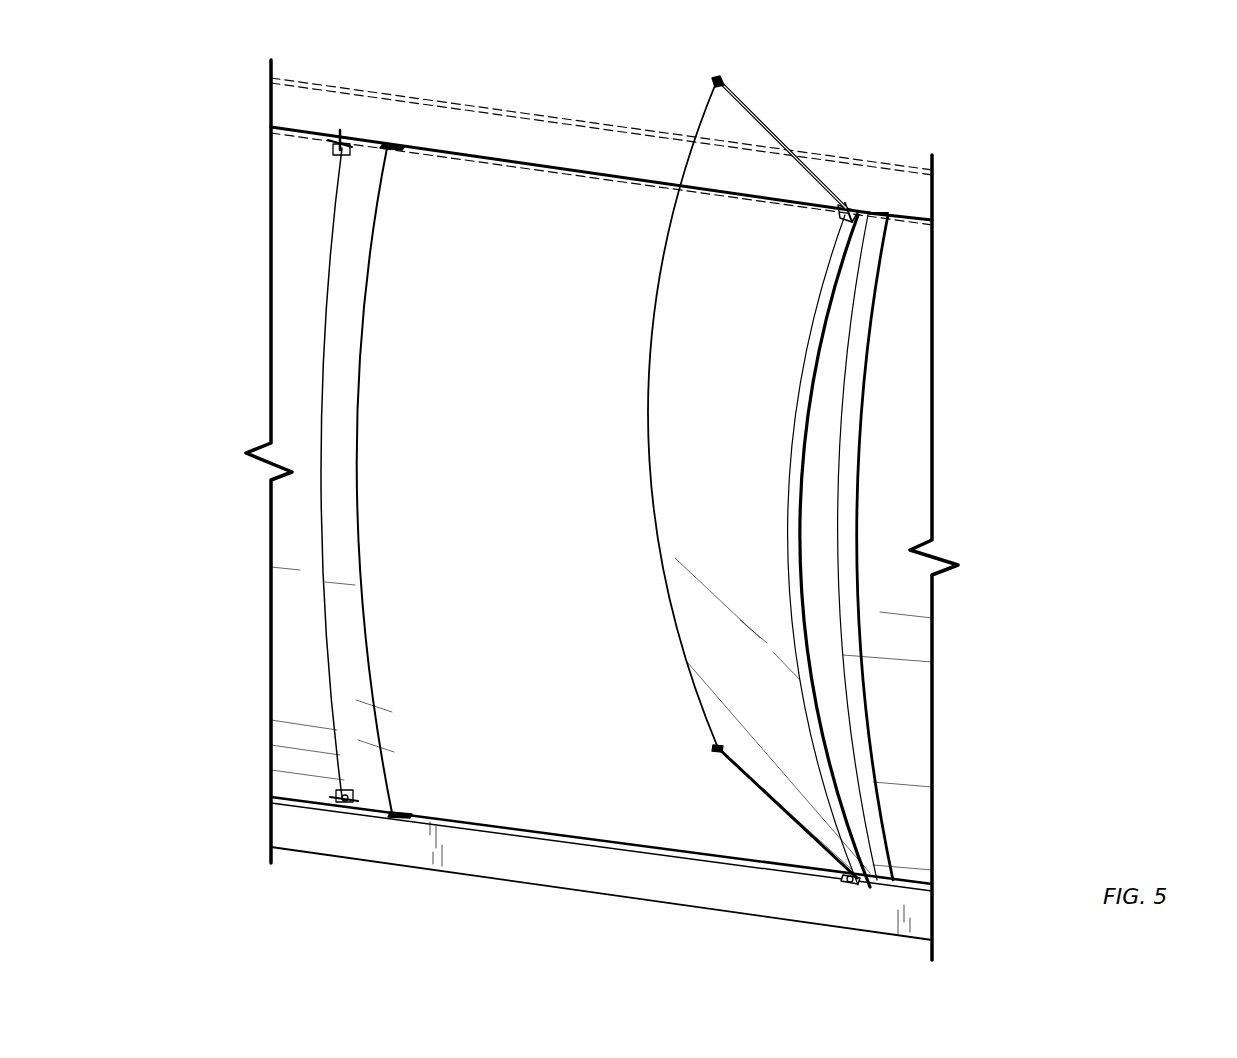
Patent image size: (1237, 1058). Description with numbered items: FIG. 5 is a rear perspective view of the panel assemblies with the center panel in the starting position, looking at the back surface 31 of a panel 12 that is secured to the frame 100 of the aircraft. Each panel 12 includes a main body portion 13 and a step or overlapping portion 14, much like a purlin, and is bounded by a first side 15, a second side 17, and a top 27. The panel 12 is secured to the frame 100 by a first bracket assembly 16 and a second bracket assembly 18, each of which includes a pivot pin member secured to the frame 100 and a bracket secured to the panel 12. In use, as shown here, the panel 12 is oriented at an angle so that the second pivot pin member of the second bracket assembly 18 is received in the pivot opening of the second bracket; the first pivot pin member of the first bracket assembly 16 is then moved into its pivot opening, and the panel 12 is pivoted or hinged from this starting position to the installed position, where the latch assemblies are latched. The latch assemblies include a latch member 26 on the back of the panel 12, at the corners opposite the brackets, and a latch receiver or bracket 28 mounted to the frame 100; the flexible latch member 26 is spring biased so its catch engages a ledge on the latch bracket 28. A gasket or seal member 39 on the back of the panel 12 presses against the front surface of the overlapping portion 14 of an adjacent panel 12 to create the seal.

The frame 100 is at (520, 137).
The panel 12 is at (726, 461).
The main body portion 13 is at (678, 515).
The overlapping portion 14 is at (846, 250).
The first side 15 is at (837, 312).
The first bracket assembly 16 is at (337, 138).
The second side 17 is at (703, 108).
The second bracket assembly 18 is at (330, 786).
The latch member 26 is at (722, 82).
The top 27 is at (790, 150).
The latch receiver or bracket 28 is at (400, 143).
The back surface 31 is at (738, 442).
The gasket or seal member 39 is at (858, 353).